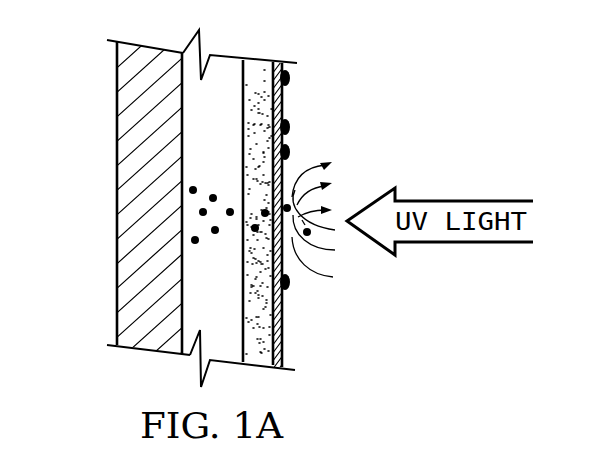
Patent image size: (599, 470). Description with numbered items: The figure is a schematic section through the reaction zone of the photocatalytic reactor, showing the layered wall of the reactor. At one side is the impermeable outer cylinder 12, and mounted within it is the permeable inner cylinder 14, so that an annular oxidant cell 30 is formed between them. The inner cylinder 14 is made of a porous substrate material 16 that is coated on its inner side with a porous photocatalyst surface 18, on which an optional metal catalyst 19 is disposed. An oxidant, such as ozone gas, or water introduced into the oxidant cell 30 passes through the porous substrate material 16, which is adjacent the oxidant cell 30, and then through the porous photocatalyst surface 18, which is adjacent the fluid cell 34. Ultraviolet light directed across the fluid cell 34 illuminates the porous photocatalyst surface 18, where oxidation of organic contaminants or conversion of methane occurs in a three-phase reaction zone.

The outer cylinder 12 is at (118, 138).
The inner cylinder 14 is at (280, 343).
The porous substrate material 16 is at (243, 300).
The porous photocatalyst surface 18 is at (282, 318).
The metal catalyst 19 is at (286, 128).
The oxidant cell 30 is at (227, 112).
The fluid cell 34 is at (412, 143).